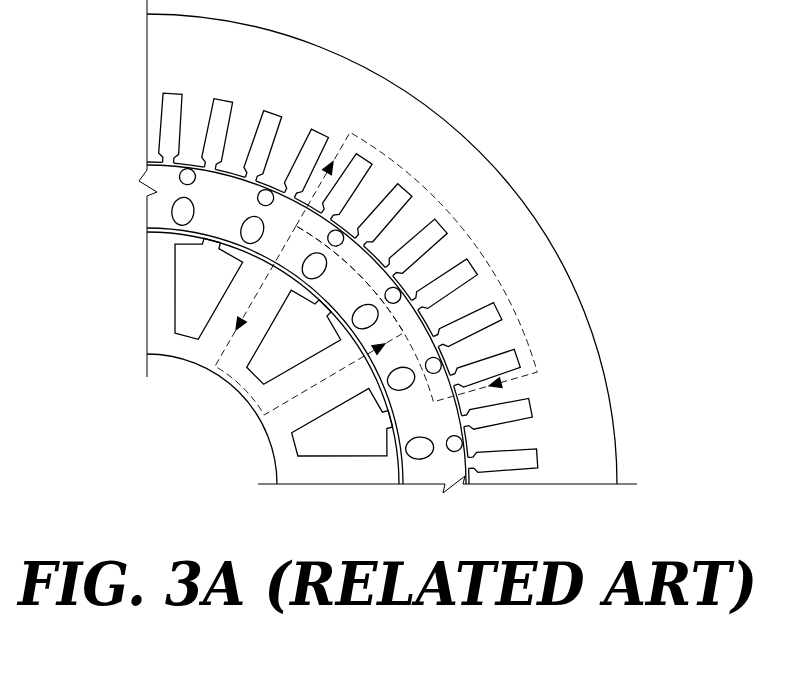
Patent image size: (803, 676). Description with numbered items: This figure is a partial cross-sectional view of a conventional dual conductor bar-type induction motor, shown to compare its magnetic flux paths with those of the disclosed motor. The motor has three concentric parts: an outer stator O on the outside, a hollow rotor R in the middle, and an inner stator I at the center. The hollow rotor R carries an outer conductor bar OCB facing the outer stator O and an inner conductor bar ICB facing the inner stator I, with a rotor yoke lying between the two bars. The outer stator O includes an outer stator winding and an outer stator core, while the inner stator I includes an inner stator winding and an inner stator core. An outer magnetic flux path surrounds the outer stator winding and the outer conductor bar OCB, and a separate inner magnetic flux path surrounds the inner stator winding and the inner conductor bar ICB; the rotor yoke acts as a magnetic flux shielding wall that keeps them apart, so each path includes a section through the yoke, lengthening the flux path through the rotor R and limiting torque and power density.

The outer stator O is at (145, 15).
The hollow rotor R is at (75, 152).
The inner stator I is at (145, 238).
The outer conductor bar OCB is at (178, 177).
The inner conductor bar ICB is at (172, 212).